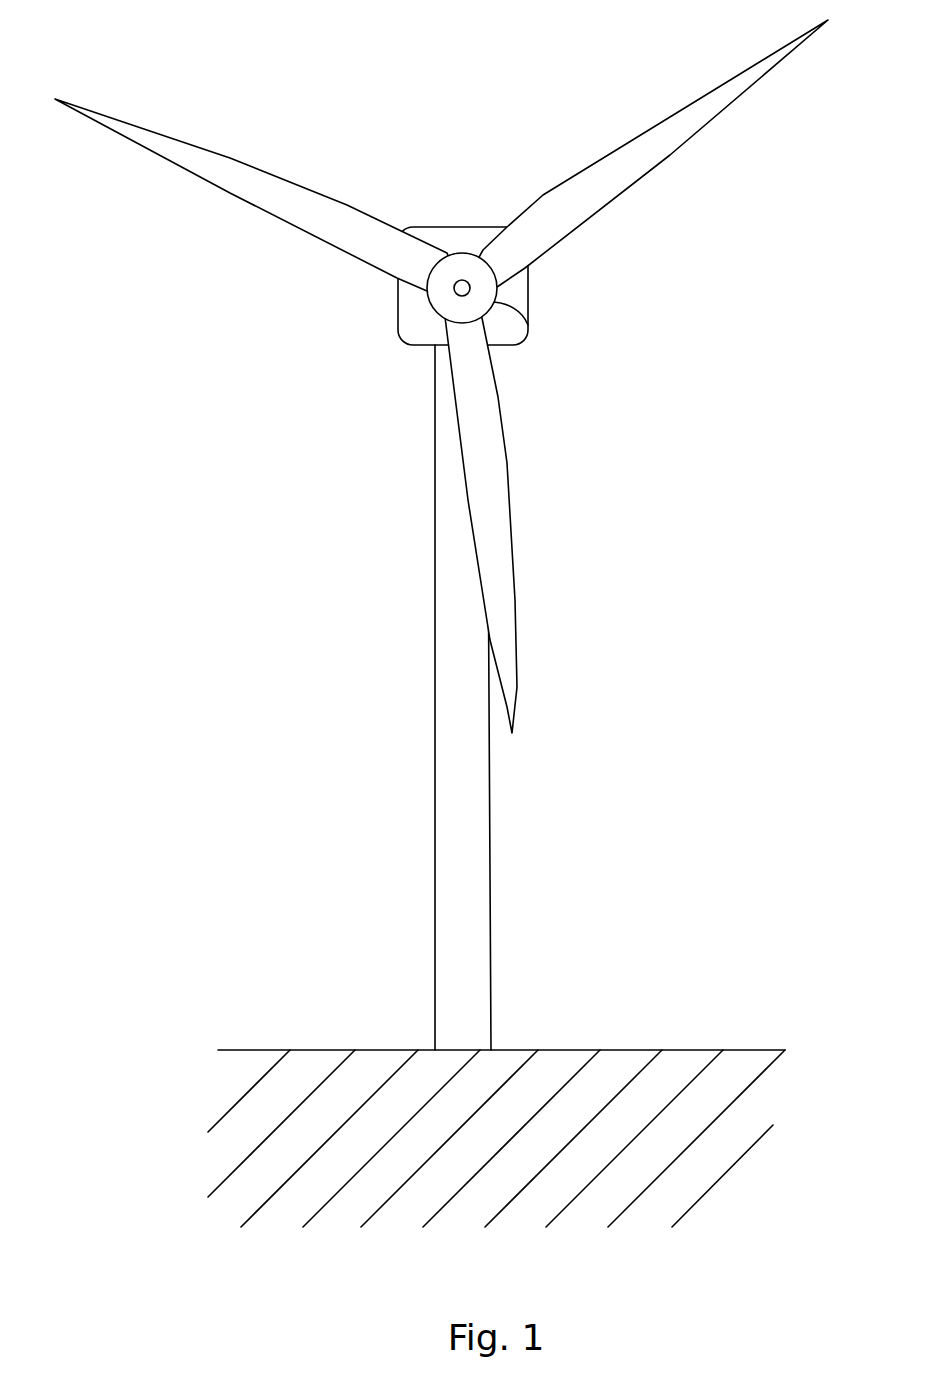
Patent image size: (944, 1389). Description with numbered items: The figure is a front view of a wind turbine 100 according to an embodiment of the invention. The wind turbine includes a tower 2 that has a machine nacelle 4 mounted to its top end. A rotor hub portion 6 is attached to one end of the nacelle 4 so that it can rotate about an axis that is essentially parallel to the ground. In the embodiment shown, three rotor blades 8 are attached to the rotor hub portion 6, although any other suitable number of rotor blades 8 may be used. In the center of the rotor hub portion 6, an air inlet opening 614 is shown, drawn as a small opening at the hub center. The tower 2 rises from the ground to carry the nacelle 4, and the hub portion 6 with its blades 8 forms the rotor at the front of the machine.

The wind turbine 100 is at (452, 34).
The tower 2 is at (482, 918).
The machine nacelle 4 is at (412, 326).
The rotor hub portion 6 is at (530, 327).
The rotor blades 8 is at (697, 140).
The air inlet opening 614 is at (460, 280).